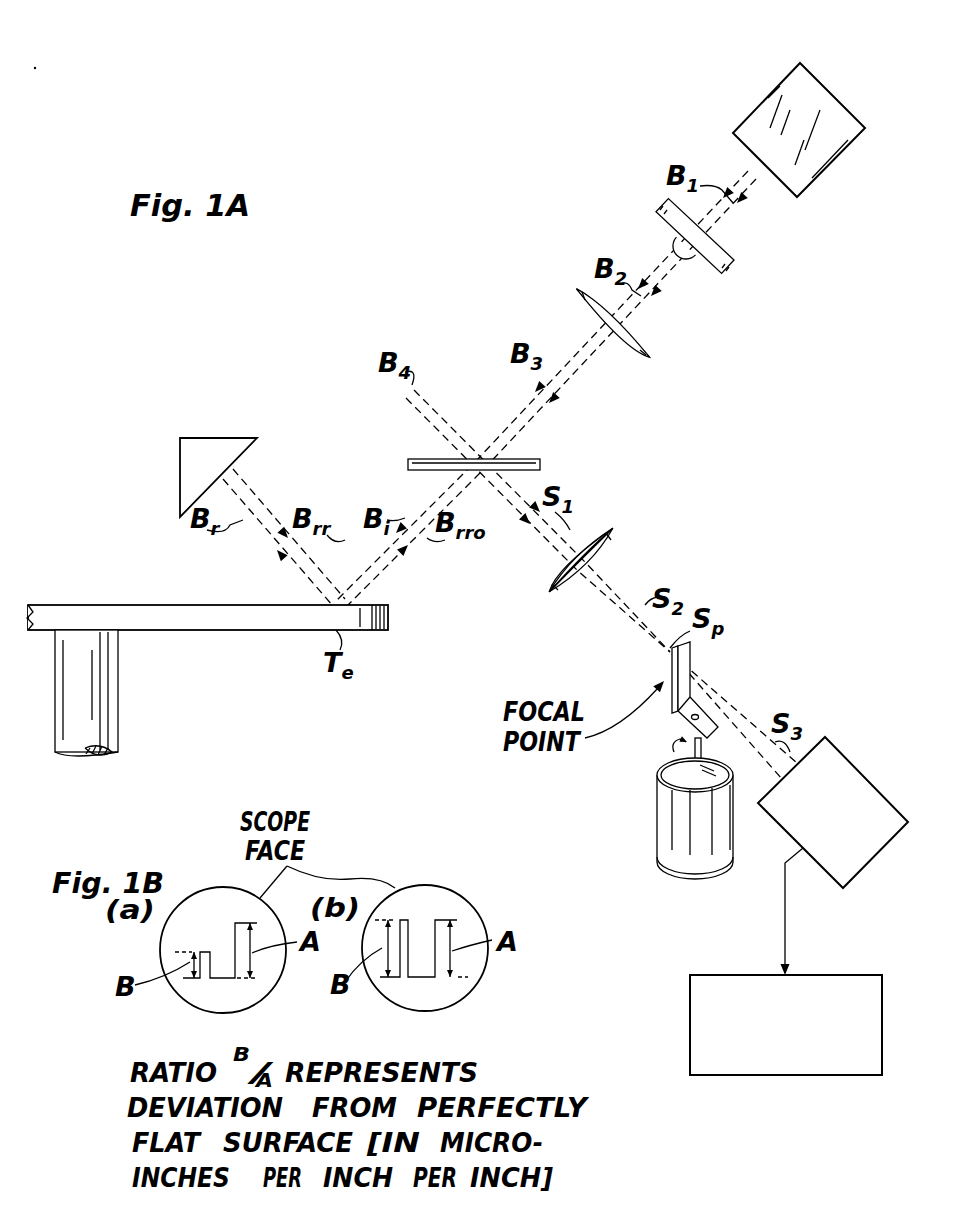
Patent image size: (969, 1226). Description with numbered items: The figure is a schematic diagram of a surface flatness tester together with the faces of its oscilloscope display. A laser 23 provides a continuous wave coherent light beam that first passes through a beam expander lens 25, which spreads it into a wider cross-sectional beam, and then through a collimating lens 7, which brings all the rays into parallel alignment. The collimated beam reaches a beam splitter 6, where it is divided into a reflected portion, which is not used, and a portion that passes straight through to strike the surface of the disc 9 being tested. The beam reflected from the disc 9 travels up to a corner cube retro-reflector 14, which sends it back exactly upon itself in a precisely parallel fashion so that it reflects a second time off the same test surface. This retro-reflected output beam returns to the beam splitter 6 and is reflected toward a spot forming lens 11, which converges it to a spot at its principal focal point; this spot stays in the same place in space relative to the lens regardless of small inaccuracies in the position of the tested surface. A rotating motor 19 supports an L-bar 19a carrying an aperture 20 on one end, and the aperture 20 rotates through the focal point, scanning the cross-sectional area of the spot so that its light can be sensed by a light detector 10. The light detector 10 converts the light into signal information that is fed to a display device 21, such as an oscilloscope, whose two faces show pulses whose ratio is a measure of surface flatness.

The laser 23 is at (712, 106).
The beam expander lens 25 is at (751, 282).
The collimating lens 7 is at (712, 370).
The beam splitter 6 is at (606, 507).
The retro-reflector 14 is at (175, 415).
The disc 9 is at (262, 622).
The spot forming lens 11 is at (513, 592).
The aperture 20 is at (671, 671).
The L-bar 19a is at (690, 700).
The rotating motor 19 is at (660, 822).
The light detector 10 is at (833, 751).
The display device 21 is at (818, 972).